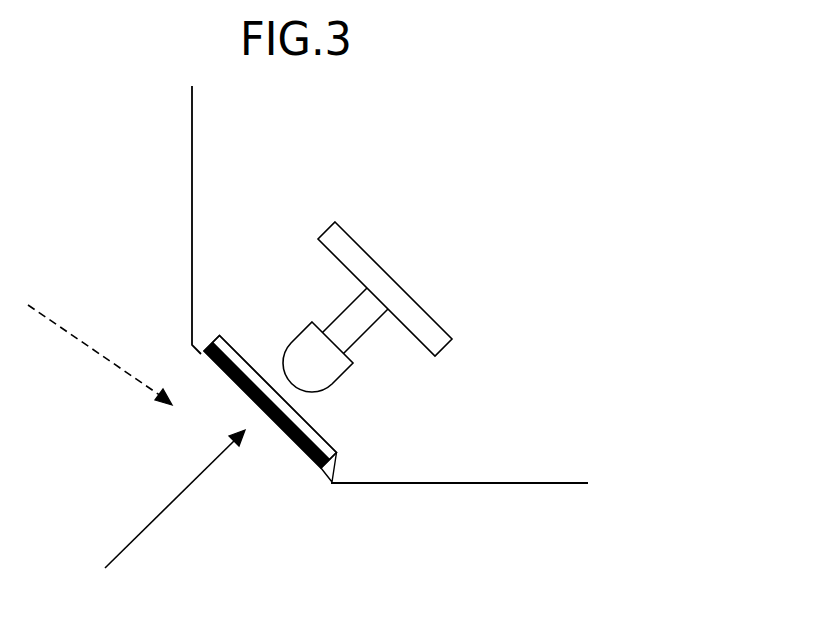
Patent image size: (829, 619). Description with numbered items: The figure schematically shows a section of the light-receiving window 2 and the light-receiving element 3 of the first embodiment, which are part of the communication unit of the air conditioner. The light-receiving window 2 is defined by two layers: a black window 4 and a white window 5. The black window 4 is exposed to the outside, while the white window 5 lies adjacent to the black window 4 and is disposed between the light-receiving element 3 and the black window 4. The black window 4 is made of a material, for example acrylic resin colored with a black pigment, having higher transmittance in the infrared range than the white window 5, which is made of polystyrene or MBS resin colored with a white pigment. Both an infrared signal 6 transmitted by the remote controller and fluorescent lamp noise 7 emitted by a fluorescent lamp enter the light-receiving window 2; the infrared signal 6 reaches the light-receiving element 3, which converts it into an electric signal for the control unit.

The light-receiving window 2 is at (326, 462).
The light-receiving element 3 is at (357, 241).
The black window 4 is at (328, 470).
The white window 5 is at (337, 456).
The infrared signal 6 is at (170, 505).
The fluorescent lamp noise 7 is at (73, 338).